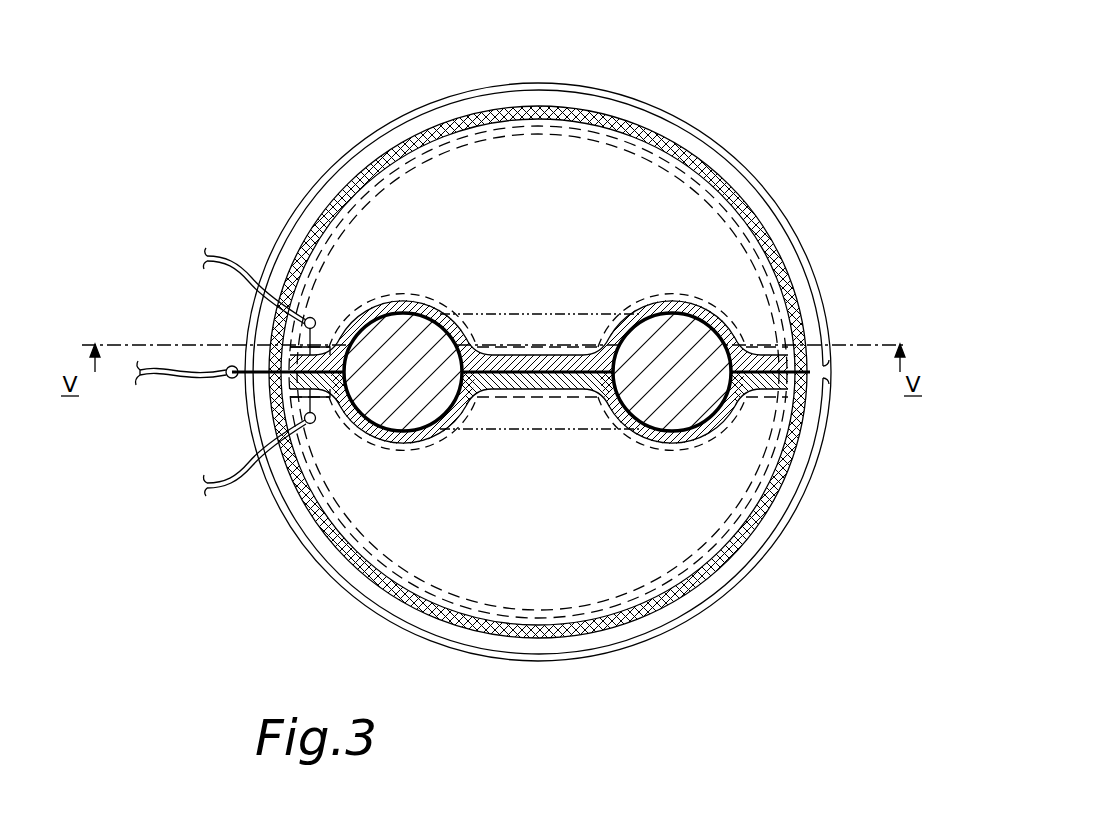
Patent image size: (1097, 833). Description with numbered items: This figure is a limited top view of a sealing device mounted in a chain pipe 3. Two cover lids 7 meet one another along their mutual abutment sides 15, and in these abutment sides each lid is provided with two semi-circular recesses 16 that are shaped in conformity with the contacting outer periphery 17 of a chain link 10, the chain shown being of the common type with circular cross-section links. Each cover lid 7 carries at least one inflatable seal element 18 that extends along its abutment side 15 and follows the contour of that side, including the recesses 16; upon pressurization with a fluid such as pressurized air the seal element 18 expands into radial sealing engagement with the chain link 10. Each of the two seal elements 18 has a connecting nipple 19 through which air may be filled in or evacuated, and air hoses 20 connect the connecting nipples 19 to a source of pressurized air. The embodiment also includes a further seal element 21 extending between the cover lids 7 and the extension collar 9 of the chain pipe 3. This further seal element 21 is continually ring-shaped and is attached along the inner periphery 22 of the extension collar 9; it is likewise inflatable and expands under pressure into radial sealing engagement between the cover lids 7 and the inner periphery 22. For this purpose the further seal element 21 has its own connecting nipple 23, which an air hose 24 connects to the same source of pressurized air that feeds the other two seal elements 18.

The chain pipe 3 is at (690, 138).
The cover lids 7 is at (541, 214).
The extension collar 9 is at (620, 110).
The chain link 10 is at (392, 342).
The mutual abutment sides 15 is at (553, 358).
The semi-circular recesses 16 is at (415, 322).
The outer periphery 17 is at (410, 446).
The inflatable seal element 18 is at (462, 308).
The connecting nipple 19 is at (304, 322).
The air hoses 20 is at (216, 259).
The further seal element 21 is at (447, 125).
The inner periphery 22 is at (560, 115).
The connecting nipple 23 is at (227, 378).
The air hose 24 is at (168, 362).